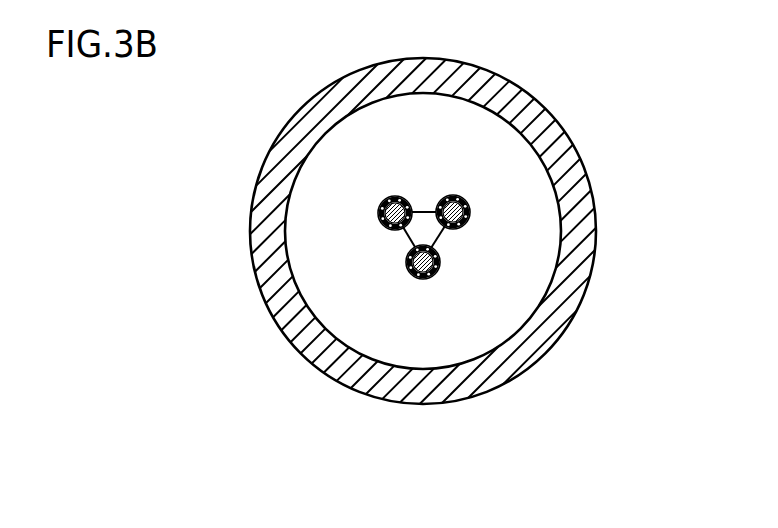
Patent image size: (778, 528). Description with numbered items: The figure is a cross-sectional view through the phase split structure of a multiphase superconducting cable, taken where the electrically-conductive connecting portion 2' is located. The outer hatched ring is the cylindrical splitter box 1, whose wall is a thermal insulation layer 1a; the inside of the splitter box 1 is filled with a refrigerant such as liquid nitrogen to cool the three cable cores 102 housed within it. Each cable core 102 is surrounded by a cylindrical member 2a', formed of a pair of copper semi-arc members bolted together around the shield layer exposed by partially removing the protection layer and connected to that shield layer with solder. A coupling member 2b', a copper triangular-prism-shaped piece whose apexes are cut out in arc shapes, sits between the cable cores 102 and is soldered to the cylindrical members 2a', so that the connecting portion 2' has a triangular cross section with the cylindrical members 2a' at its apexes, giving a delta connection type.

The splitter box 1 is at (538, 100).
The thermal insulation layer 1a is at (458, 75).
The electrically-conductive connecting portion 2' is at (425, 215).
The cylindrical member 2a' is at (423, 263).
The coupling member 2b' is at (529, 251).
The cable core 102 is at (467, 203).